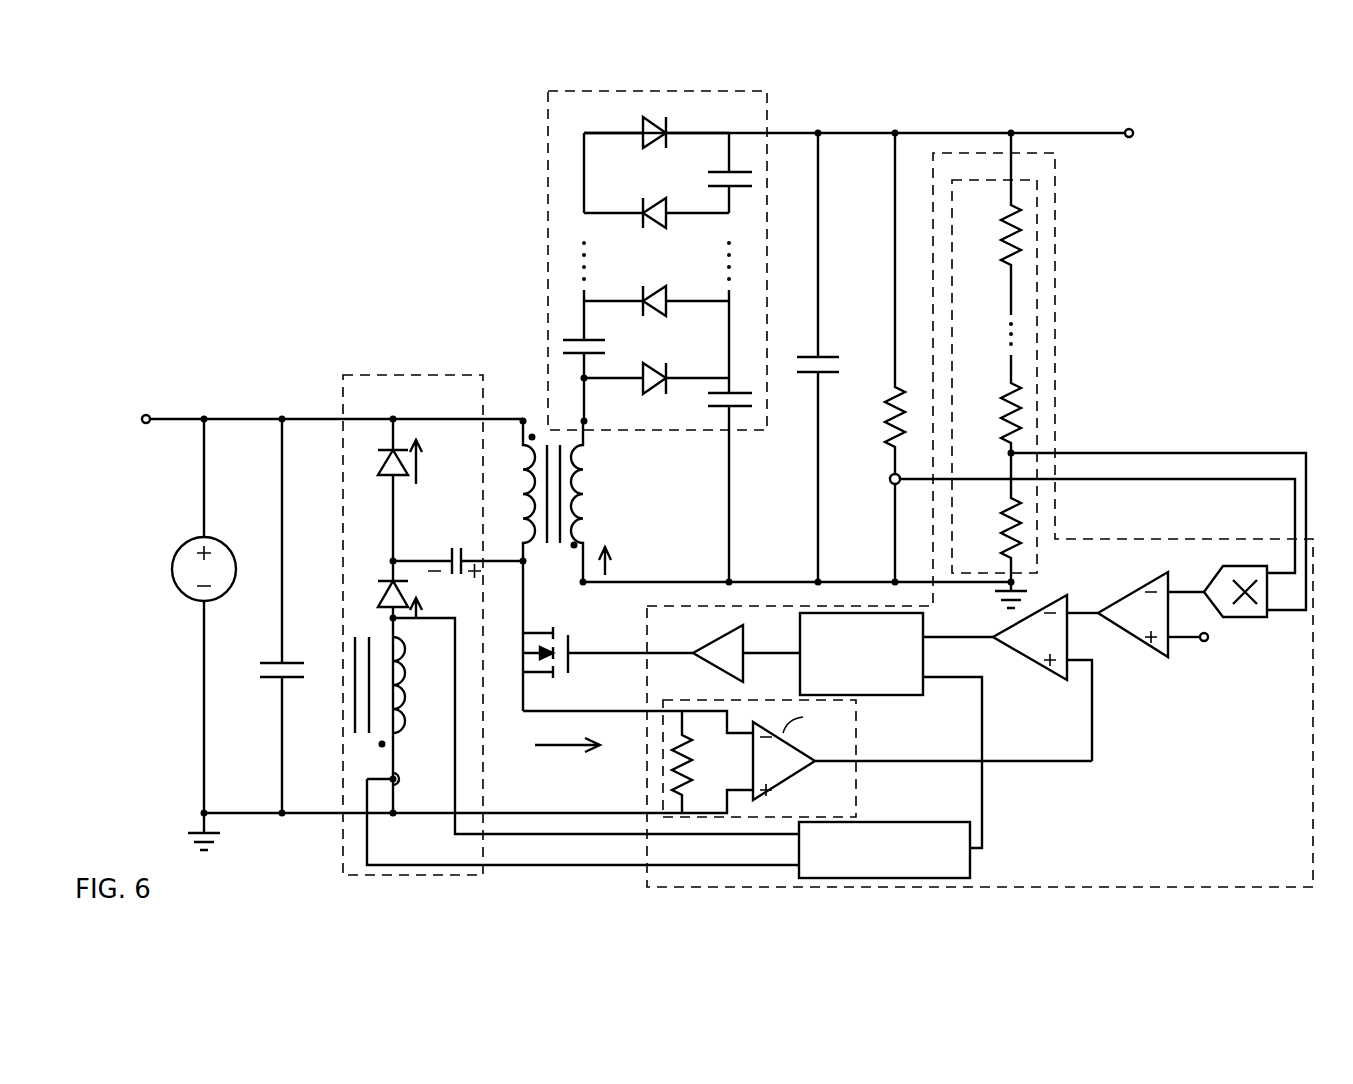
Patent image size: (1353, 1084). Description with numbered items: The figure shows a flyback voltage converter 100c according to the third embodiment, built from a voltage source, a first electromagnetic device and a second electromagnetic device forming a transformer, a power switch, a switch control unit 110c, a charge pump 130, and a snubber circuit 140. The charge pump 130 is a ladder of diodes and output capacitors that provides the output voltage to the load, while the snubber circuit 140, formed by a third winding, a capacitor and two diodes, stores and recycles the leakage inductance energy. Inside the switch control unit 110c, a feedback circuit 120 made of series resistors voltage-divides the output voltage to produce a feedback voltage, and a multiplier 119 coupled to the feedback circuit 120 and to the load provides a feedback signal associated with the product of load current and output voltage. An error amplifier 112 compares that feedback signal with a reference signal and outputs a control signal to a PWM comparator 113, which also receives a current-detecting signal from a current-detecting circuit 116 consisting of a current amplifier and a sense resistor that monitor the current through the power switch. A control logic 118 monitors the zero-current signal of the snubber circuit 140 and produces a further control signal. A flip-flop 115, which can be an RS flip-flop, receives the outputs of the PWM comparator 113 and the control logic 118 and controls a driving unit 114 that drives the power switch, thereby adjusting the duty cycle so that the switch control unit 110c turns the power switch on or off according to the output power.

The flyback voltage converter 100c is at (292, 188).
The switch control unit 110c is at (1172, 540).
The error amplifier 112 is at (1138, 640).
The PWM comparator 113 is at (1036, 666).
The driving unit 114 is at (722, 640).
The flip-flop 115 is at (903, 697).
The current-detecting circuit 116 is at (662, 771).
The control logic 118 is at (885, 822).
The multiplier 119 is at (1245, 566).
The feedback circuit 120 is at (1037, 380).
The charge pump 130 is at (548, 206).
The snubber circuit 140 is at (412, 375).